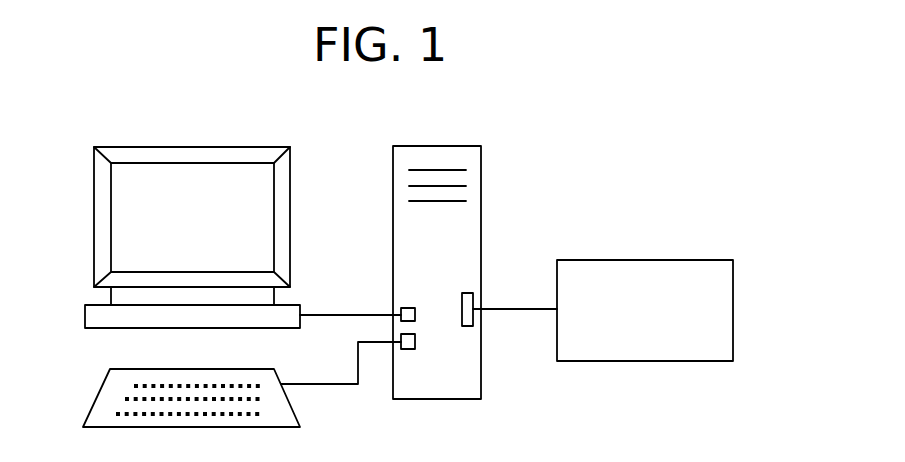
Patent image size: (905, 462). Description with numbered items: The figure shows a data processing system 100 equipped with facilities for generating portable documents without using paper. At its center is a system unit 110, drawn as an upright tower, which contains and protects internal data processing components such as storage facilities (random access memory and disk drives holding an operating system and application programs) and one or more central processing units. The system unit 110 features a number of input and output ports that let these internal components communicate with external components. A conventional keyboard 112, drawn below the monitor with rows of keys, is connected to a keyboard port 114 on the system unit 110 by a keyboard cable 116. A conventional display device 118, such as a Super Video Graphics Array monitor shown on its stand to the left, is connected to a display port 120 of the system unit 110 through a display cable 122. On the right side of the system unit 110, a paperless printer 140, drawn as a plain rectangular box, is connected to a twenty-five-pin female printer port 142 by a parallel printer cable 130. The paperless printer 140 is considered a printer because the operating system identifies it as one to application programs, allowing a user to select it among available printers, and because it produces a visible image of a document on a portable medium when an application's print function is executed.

The data processing system 100 is at (608, 116).
The system unit 110 is at (439, 257).
The keyboard 112 is at (98, 390).
The keyboard port 114 is at (407, 348).
The keyboard cable 116 is at (342, 384).
The display device 118 is at (168, 146).
The display port 120 is at (398, 306).
The display cable 122 is at (321, 313).
The parallel printer cable 130 is at (510, 310).
The paperless printer 140 is at (668, 258).
The printer port 142 is at (465, 292).